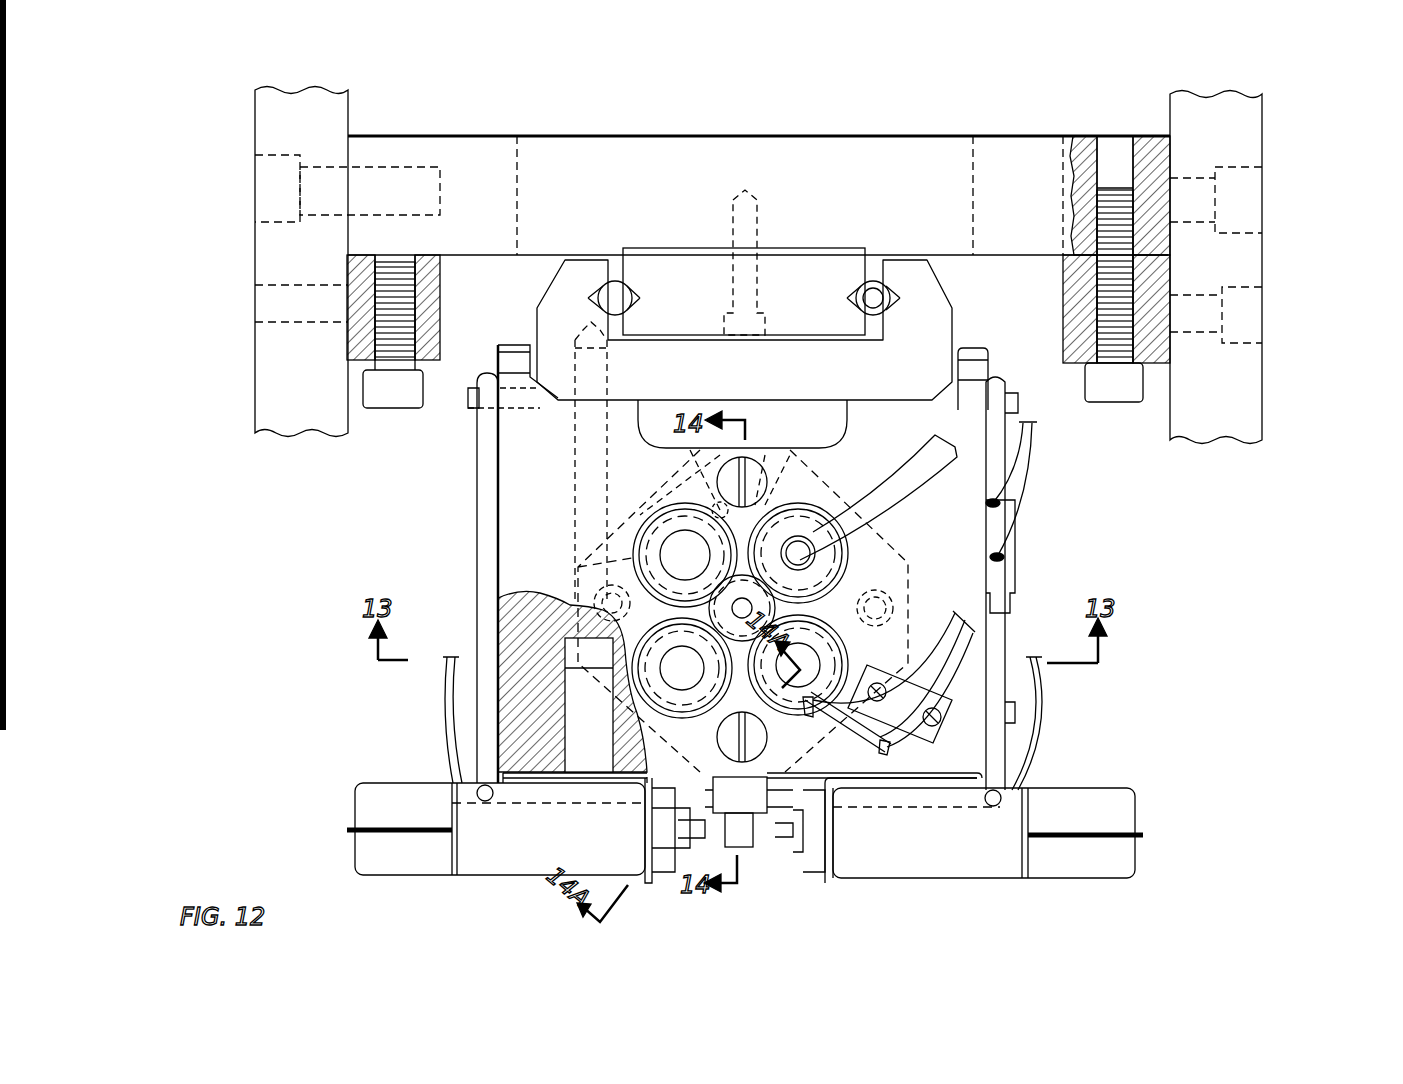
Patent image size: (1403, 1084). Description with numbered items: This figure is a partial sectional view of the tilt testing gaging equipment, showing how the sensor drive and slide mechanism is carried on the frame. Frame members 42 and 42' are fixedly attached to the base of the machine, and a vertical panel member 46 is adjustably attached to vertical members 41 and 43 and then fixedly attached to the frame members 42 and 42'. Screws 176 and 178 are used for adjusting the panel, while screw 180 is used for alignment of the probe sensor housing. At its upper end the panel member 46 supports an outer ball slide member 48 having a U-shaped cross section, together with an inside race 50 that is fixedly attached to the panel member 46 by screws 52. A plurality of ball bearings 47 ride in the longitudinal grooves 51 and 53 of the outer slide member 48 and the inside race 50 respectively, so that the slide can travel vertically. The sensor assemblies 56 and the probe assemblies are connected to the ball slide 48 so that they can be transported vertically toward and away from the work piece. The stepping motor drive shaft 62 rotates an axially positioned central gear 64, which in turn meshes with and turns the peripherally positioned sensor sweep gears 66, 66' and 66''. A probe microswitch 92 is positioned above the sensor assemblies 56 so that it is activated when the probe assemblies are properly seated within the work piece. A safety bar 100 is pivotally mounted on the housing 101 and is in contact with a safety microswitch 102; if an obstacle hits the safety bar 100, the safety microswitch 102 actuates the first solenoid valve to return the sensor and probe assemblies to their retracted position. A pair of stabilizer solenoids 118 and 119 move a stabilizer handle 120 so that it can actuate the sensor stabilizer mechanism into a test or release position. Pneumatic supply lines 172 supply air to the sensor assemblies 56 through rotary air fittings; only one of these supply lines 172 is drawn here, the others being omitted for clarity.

The vertical member 41 is at (353, 327).
The frame member 42 is at (276, 262).
The frame member 42' is at (1260, 267).
The vertical member 43 is at (1152, 290).
The vertical panel member 46 is at (528, 137).
The ball bearings 47 is at (873, 297).
The outer ball slide member 48 is at (583, 260).
The inside race 50 is at (795, 265).
The longitudinal groove 51 is at (603, 290).
The screws 52 is at (745, 208).
The longitudinal groove 53 is at (638, 292).
The sensor assemblies 56 is at (872, 585).
The stepping motor drive shaft 62 is at (755, 612).
The central gear 64 is at (762, 600).
The sensor sweep gear 66 is at (578, 632).
The sensor sweep gear 66' is at (577, 527).
The sensor sweep gear 66'' is at (929, 505).
The probe microswitch 92 is at (885, 748).
The safety bar 100 is at (487, 515).
The housing 101 is at (507, 682).
The safety microswitch 102 is at (1015, 573).
The stabilizer solenoid 118 is at (352, 790).
The stabilizer solenoid 119 is at (1133, 810).
The stabilizer handle 120 is at (747, 800).
The pneumatic supply line 172 is at (925, 467).
The screw 176 is at (377, 392).
The screw 178 is at (1128, 392).
The screw 180 is at (990, 365).